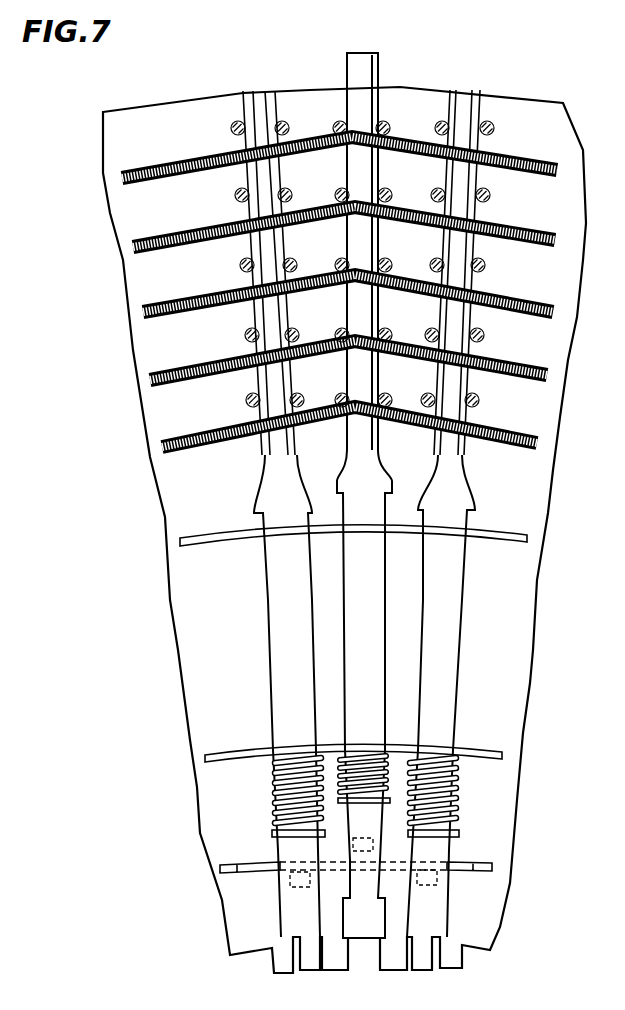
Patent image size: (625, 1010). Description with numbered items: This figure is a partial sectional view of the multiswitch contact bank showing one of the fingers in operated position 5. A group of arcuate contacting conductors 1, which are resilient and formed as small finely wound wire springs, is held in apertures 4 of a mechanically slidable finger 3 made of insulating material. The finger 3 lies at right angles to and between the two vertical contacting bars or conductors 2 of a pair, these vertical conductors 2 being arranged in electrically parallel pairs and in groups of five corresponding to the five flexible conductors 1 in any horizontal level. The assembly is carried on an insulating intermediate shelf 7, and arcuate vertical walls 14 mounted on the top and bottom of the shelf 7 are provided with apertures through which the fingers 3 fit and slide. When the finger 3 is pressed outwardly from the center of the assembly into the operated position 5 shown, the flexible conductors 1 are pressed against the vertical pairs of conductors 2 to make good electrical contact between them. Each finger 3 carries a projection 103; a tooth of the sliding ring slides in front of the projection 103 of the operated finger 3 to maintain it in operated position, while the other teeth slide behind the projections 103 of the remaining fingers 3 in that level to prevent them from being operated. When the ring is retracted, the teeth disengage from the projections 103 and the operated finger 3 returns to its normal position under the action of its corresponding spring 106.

The intermediate shelf 7 is at (197, 110).
The operated position 5 is at (380, 53).
The arcuate contacting conductors 1 is at (131, 251).
The vertical contacting bars 2 is at (292, 258).
The apertures 4 is at (463, 217).
The slidable finger 3 is at (276, 653).
The arcuate vertical walls 14 is at (218, 547).
The spring 106 is at (268, 798).
The projection 103 is at (357, 862).